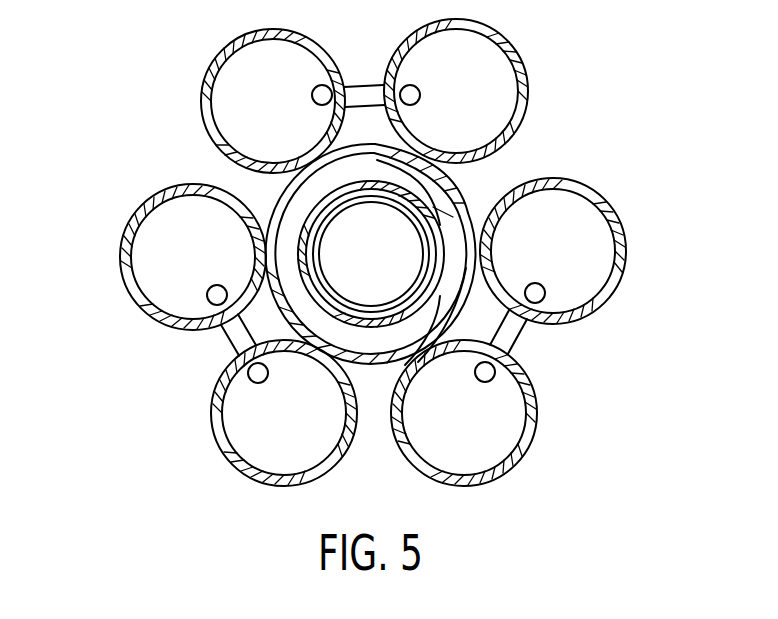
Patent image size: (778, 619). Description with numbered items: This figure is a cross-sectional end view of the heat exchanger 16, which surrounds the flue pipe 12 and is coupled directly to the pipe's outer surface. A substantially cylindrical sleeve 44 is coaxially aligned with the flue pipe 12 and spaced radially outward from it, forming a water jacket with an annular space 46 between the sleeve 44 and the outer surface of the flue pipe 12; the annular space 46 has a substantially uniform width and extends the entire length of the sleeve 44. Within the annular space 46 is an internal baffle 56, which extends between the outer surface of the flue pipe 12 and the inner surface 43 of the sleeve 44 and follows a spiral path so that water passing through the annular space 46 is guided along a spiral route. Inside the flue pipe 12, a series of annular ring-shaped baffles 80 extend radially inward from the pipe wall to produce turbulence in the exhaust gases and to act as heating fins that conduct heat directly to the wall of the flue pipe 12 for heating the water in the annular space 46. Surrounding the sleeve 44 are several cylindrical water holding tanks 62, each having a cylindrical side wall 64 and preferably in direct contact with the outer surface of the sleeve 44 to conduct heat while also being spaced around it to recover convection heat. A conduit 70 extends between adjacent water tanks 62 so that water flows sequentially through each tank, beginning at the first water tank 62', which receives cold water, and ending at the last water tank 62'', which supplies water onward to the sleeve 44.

The heat exchanger 16 is at (636, 166).
The water holding tank 62 is at (325, 268).
The first water tank 62' is at (593, 251).
The last water tank 62'' is at (495, 91).
The cylindrical side wall 64 is at (562, 178).
The conduit 70 is at (372, 85).
The internal baffle 56 is at (375, 148).
The sleeve 44 is at (275, 198).
The annular space 46 is at (398, 340).
The flue pipe 12 is at (440, 296).
The inner surface of sleeve 43 is at (320, 285).
The baffle 80 is at (407, 290).